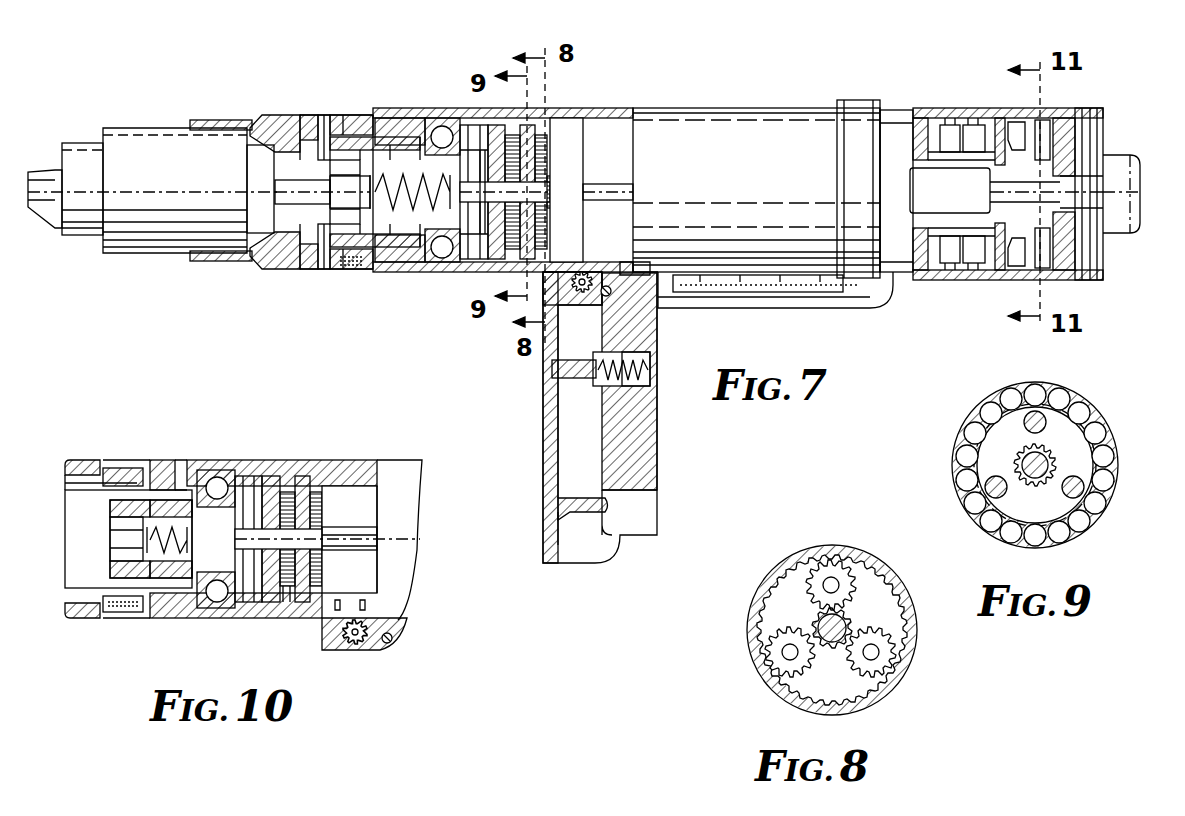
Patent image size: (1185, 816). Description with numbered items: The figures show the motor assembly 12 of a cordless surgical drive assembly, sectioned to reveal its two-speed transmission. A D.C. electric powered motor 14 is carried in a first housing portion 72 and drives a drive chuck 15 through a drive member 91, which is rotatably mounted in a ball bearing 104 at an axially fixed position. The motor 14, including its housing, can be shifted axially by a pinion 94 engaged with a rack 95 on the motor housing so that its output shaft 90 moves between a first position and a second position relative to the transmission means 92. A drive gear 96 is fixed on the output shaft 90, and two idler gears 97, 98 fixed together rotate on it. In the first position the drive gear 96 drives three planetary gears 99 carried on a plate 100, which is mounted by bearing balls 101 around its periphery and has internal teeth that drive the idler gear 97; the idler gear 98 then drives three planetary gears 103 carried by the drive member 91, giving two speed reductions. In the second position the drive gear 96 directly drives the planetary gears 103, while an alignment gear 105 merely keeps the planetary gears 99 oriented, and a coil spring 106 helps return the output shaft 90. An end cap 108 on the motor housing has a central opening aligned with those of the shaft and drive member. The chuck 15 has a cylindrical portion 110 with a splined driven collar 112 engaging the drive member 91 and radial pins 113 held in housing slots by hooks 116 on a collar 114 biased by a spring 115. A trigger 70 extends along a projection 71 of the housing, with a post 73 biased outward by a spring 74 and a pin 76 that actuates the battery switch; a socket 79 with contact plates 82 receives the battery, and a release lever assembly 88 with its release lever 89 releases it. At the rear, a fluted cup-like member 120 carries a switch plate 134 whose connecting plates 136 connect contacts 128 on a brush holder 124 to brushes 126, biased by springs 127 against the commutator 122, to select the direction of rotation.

In FIG. 7, the motor assembly 12 is at (790, 108).
In FIG. 10, the motor assembly 12 is at (400, 461).
In FIG. 7, the D.C. electric powered motor 14 is at (760, 192).
In FIG. 10, the D.C. electric powered motor 14 is at (422, 474).
In FIG. 7, the drive chuck 15 is at (142, 128).
In FIG. 7, the trigger 70 is at (543, 478).
In FIG. 7, the projection 71 is at (659, 448).
In FIG. 7, the first housing portion 72 is at (388, 108).
In FIG. 10, the first housing portion 72 is at (172, 460).
In FIG. 8, the first housing portion 72 is at (866, 556).
In FIG. 9, the first housing portion 72 is at (1020, 384).
In FIG. 7, the post 73 is at (552, 392).
In FIG. 7, the spring 74 is at (652, 372).
In FIG. 7, the pin 76 is at (580, 498).
In FIG. 7, the socket 79 is at (786, 302).
In FIG. 7, the contact plates 82 is at (840, 308).
In FIG. 7, the release lever assembly 88 is at (612, 294).
In FIG. 10, the release lever assembly 88 is at (393, 640).
In FIG. 7, the release lever 89 is at (662, 272).
In FIG. 7, the output shaft 90 is at (635, 194).
In FIG. 10, the output shaft 90 is at (378, 536).
In FIG. 8, the output shaft 90 is at (840, 624).
In FIG. 9, the output shaft 90 is at (1022, 468).
In FIG. 7, the drive member 91 is at (330, 202).
In FIG. 10, the drive member 91 is at (115, 505).
In FIG. 7, the transmission means 92 is at (493, 128).
In FIG. 7, the pinion 94 is at (584, 270).
In FIG. 10, the pinion 94 is at (357, 646).
In FIG. 7, the rack 95 is at (640, 266).
In FIG. 10, the rack 95 is at (384, 620).
In FIG. 7, the drive gear 96 is at (548, 184).
In FIG. 8, the drive gear 96 is at (816, 626).
In FIG. 7, the idler gear 97 is at (551, 206).
In FIG. 10, the idler gear 97 is at (268, 476).
In FIG. 9, the idler gear 97 is at (1016, 452).
In FIG. 7, the idler gear 98 is at (475, 250).
In FIG. 10, the idler gear 98 is at (240, 474).
In FIG. 7, the planetary gears 99 is at (543, 135).
In FIG. 10, the planetary gears 99 is at (318, 474).
In FIG. 8, the planetary gears 99 is at (832, 565).
In FIG. 7, the plate 100 is at (530, 118).
In FIG. 10, the plate 100 is at (285, 604).
In FIG. 9, the plate 100 is at (1068, 510).
In FIG. 7, the bearing balls 101 is at (500, 262).
In FIG. 10, the bearing balls 101 is at (303, 474).
In FIG. 9, the bearing balls 101 is at (1070, 402).
In FIG. 7, the planetary gears 103 is at (511, 130).
In FIG. 10, the planetary gears 103 is at (287, 474).
In FIG. 7, the ball bearing 104 is at (432, 275).
In FIG. 10, the ball bearing 104 is at (225, 608).
In FIG. 7, the alignment gear 105 is at (578, 183).
In FIG. 10, the alignment gear 105 is at (330, 528).
In FIG. 7, the coil spring 106 is at (427, 118).
In FIG. 10, the coil spring 106 is at (157, 578).
In FIG. 7, the end cap 108 is at (1127, 156).
In FIG. 7, the cylindrical portion 110 is at (385, 268).
In FIG. 7, the clutch block 112 is at (350, 268).
In FIG. 7, the pins 113 is at (323, 113).
In FIG. 7, the collar 114 is at (343, 113).
In FIG. 10, the collar 114 is at (122, 460).
In FIG. 7, the spring 115 is at (340, 268).
In FIG. 10, the spring 115 is at (120, 618).
In FIG. 7, the hooks 116 is at (302, 113).
In FIG. 10, the hooks 116 is at (83, 460).
In FIG. 7, the cup-like member 120 is at (976, 112).
In FIG. 7, the commutator 122 is at (1006, 190).
In FIG. 7, the brush holder 124 is at (992, 266).
In FIG. 7, the brushes 126 is at (964, 248).
In FIG. 7, the springs 127 is at (951, 124).
In FIG. 7, the contacts 128 is at (1017, 122).
In FIG. 7, the switch plate 134 is at (1092, 115).
In FIG. 7, the connecting plates 136 is at (1062, 124).